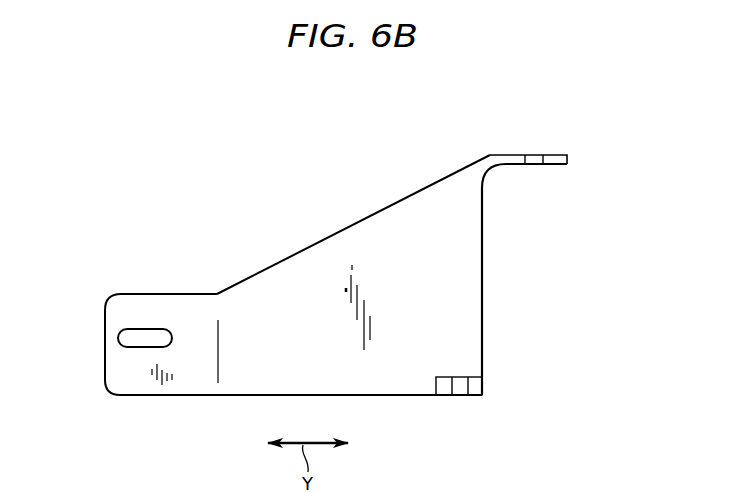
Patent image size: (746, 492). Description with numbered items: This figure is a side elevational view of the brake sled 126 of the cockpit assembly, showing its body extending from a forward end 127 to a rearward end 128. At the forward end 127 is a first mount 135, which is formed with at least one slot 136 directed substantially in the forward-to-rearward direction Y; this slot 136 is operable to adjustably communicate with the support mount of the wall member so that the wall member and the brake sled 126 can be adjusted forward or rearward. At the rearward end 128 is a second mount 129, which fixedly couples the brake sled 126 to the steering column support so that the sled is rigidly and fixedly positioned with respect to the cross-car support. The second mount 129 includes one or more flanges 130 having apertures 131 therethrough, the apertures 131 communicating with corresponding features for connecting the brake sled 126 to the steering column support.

The brake sled 126 is at (339, 211).
The forward end 127 is at (160, 294).
The rearward end 128 is at (643, 288).
The second mount 129 is at (543, 135).
The flanges 130 is at (500, 155).
The apertures 131 is at (543, 180).
The first mount 135 is at (76, 325).
The slot 136 is at (137, 347).